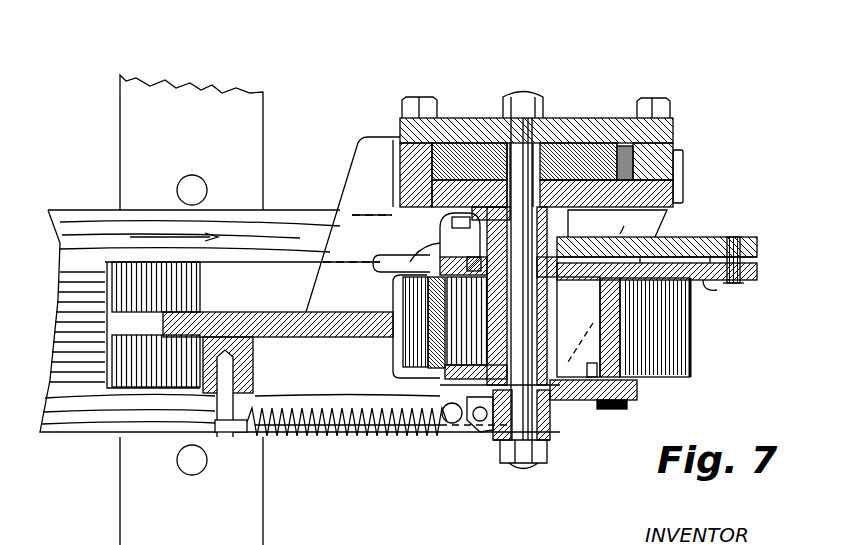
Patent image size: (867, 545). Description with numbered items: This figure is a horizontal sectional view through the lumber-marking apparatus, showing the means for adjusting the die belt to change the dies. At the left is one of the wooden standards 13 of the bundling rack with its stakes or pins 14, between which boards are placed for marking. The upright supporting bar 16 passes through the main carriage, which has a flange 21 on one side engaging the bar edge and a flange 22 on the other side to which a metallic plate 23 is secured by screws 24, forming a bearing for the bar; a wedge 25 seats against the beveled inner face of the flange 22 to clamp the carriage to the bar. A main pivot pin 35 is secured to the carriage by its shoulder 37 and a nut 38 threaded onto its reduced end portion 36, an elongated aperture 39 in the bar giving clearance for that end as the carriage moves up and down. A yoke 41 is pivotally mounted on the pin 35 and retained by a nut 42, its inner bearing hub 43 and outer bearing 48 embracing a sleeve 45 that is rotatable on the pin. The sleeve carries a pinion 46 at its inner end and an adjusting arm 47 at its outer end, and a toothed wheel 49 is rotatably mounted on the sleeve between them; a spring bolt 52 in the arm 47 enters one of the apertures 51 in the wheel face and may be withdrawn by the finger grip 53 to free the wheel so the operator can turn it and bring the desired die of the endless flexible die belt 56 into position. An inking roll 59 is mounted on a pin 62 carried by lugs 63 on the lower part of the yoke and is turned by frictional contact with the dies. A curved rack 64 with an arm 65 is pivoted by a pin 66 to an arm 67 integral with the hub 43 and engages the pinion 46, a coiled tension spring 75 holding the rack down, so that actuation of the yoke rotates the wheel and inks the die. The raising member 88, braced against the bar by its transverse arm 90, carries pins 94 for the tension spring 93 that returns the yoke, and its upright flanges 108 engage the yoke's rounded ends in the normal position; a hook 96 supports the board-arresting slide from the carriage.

The wooden standard 13 is at (157, 126).
The stake or pin 14 is at (182, 177).
The upright supporting bar 16 is at (583, 157).
The flange 21 is at (418, 158).
The flange 22 is at (647, 157).
The metallic plate 23 is at (573, 128).
The screw 24 is at (417, 97).
The wedge 25 is at (623, 162).
The main pivot pin 35 is at (545, 432).
The reduced end portion 36 is at (524, 150).
The shoulder 37 is at (500, 143).
The nut 38 is at (520, 93).
The elongated aperture 39 is at (640, 173).
The yoke 41 is at (455, 425).
The nut 42 is at (520, 465).
The inner bearing hub 43 is at (467, 262).
The sleeve 45 is at (540, 312).
The pinion 46 is at (617, 223).
The adjusting arm 47 is at (488, 422).
The outer bearing 48 is at (545, 405).
The toothed wheel 49 is at (690, 355).
The aperture 51 is at (597, 367).
The spring bolt 52 is at (452, 370).
The finger grip 53 is at (474, 420).
The endless flexible die belt 56 is at (433, 323).
The inking roll 59 is at (660, 315).
The pin 62 is at (612, 410).
The lug 63 is at (637, 392).
The rack 64 is at (460, 263).
The arm 65 is at (708, 280).
The pin 66 is at (757, 268).
The arm 67 is at (693, 237).
The coiled tension spring 75 is at (636, 225).
The raising member 88 is at (112, 387).
The integral arm 90 is at (356, 162).
The tension spring 93 is at (313, 440).
The pin 94 is at (224, 437).
The hook 96 is at (683, 190).
The upright lug or flange 108 is at (403, 262).